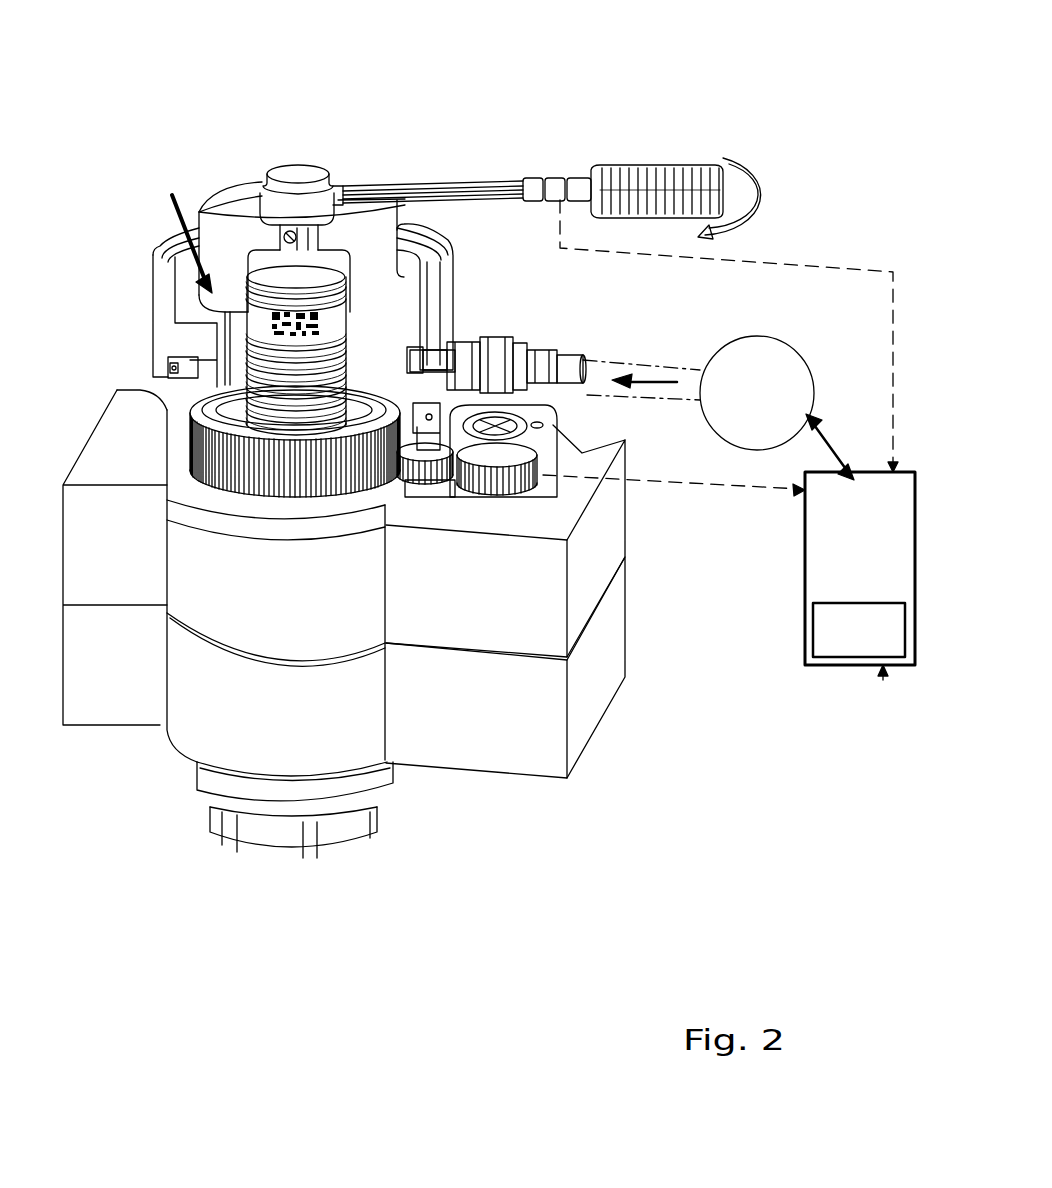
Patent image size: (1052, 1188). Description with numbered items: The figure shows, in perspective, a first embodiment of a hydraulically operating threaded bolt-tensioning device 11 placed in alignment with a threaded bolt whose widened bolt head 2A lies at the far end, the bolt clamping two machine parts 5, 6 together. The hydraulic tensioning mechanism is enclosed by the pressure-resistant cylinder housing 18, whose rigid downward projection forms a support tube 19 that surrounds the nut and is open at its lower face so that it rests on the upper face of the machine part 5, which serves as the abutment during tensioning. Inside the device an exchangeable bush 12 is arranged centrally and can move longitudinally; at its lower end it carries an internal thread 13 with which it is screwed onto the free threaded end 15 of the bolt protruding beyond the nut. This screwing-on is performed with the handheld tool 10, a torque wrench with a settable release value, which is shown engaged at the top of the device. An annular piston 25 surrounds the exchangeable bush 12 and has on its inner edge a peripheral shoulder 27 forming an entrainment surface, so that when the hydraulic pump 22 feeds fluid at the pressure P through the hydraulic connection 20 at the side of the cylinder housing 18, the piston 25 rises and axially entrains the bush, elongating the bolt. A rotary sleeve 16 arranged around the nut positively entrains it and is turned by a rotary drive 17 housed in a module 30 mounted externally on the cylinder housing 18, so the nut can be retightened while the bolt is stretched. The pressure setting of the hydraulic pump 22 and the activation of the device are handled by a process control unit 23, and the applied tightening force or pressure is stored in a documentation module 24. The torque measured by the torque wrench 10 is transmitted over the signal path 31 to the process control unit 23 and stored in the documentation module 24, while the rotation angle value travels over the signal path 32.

The bolt head 2A is at (210, 788).
The machine part 5 is at (462, 608).
The machine part 6 is at (500, 737).
The handheld tool 10 is at (507, 182).
The tensioning device 11 is at (147, 238).
The exchangeable bush 12 is at (230, 200).
The internal thread 13 is at (225, 312).
The free threaded end 15 is at (250, 373).
The rotary sleeve 16 is at (252, 473).
The rotary drive 17 is at (470, 487).
The cylinder housing 18 is at (440, 293).
The support tube 19 is at (180, 450).
The hydraulic connection 20 is at (543, 358).
The hydraulic pump 22 is at (757, 357).
The process control unit 23 is at (883, 680).
The documentation module 24 is at (835, 637).
The piston 25 is at (410, 267).
The peripheral shoulder 27 is at (176, 230).
The module 30 is at (528, 483).
The signal path 31 is at (781, 262).
The signal path 32 is at (745, 490).
The pressure P is at (657, 390).